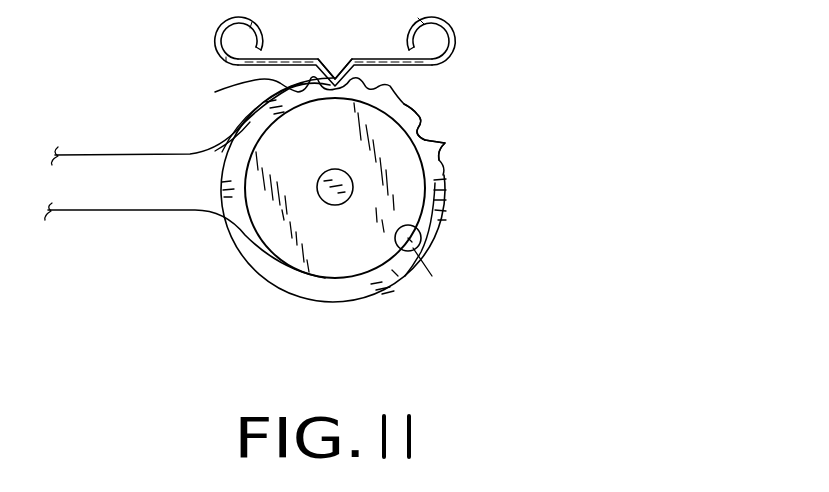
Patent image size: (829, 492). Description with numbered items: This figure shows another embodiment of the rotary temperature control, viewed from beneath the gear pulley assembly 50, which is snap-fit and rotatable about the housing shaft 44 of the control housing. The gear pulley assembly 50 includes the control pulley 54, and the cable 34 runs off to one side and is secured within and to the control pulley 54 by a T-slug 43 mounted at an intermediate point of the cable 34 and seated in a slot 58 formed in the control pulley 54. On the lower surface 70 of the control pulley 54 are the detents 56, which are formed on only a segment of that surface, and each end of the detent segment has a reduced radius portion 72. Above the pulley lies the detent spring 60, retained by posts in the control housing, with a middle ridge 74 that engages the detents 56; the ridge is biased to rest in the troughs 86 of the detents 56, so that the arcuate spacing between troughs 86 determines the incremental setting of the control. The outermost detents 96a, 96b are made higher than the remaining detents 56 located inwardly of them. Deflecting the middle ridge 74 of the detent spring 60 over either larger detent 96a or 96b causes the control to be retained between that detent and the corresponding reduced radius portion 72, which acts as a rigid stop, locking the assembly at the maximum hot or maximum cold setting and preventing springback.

The cable 34 is at (127, 211).
The T-slug 43 is at (410, 239).
The housing shaft 44 is at (318, 191).
The gear pulley assembly 50 is at (337, 264).
The control pulley 54 is at (421, 235).
The detents 56 is at (415, 118).
The slot 58 is at (420, 258).
The detent spring 60 is at (314, 62).
The lower surface 70 is at (396, 272).
The reduced radius portions 72 is at (238, 89).
The middle ridge 74 is at (334, 68).
The troughs 86 is at (423, 140).
The outermost detent 96a is at (238, 130).
The outermost detent 96b is at (447, 141).